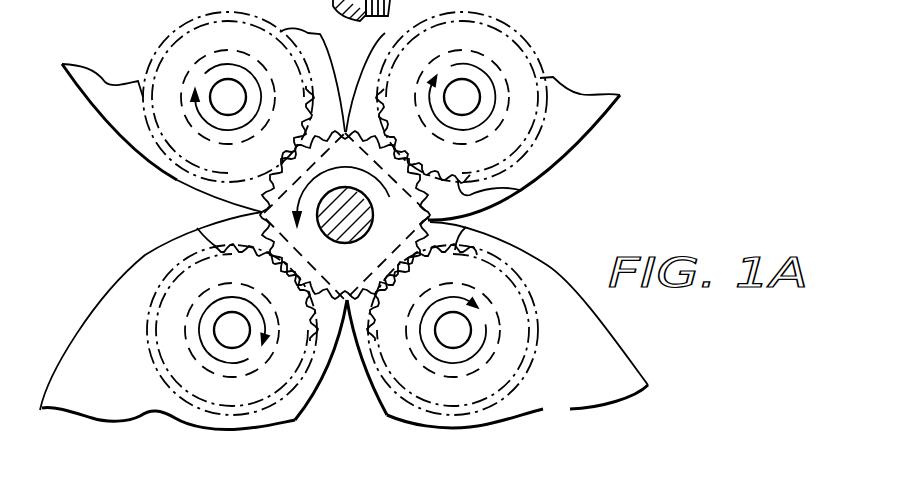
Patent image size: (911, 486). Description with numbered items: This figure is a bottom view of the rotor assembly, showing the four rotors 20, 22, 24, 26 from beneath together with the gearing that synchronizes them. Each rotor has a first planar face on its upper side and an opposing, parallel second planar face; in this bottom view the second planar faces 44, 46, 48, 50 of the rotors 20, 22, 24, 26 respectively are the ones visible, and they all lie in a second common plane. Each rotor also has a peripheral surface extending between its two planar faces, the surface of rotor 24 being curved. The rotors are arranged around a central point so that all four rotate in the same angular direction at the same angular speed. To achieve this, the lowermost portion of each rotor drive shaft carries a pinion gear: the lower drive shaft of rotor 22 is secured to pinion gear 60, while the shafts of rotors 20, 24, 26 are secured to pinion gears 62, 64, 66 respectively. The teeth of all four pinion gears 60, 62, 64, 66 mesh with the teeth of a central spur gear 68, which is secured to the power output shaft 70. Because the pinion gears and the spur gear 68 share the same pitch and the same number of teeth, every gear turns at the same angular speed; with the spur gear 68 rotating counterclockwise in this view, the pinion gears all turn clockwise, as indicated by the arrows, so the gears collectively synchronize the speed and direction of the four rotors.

The rotor 20 is at (74, 330).
The rotor 22 is at (90, 131).
The rotor 24 is at (547, 264).
The rotor 26 is at (570, 151).
The second planar face 44 is at (95, 375).
The second planar face 46 is at (115, 97).
The second planar face 48 is at (590, 375).
The second planar face 50 is at (585, 125).
The pinion gear 60 is at (262, 213).
The pinion gear 62 is at (197, 228).
The pinion gear 64 is at (465, 226).
The pinion gear 66 is at (520, 190).
The central spur gear 68 is at (315, 272).
The power output shaft 70 is at (333, 225).